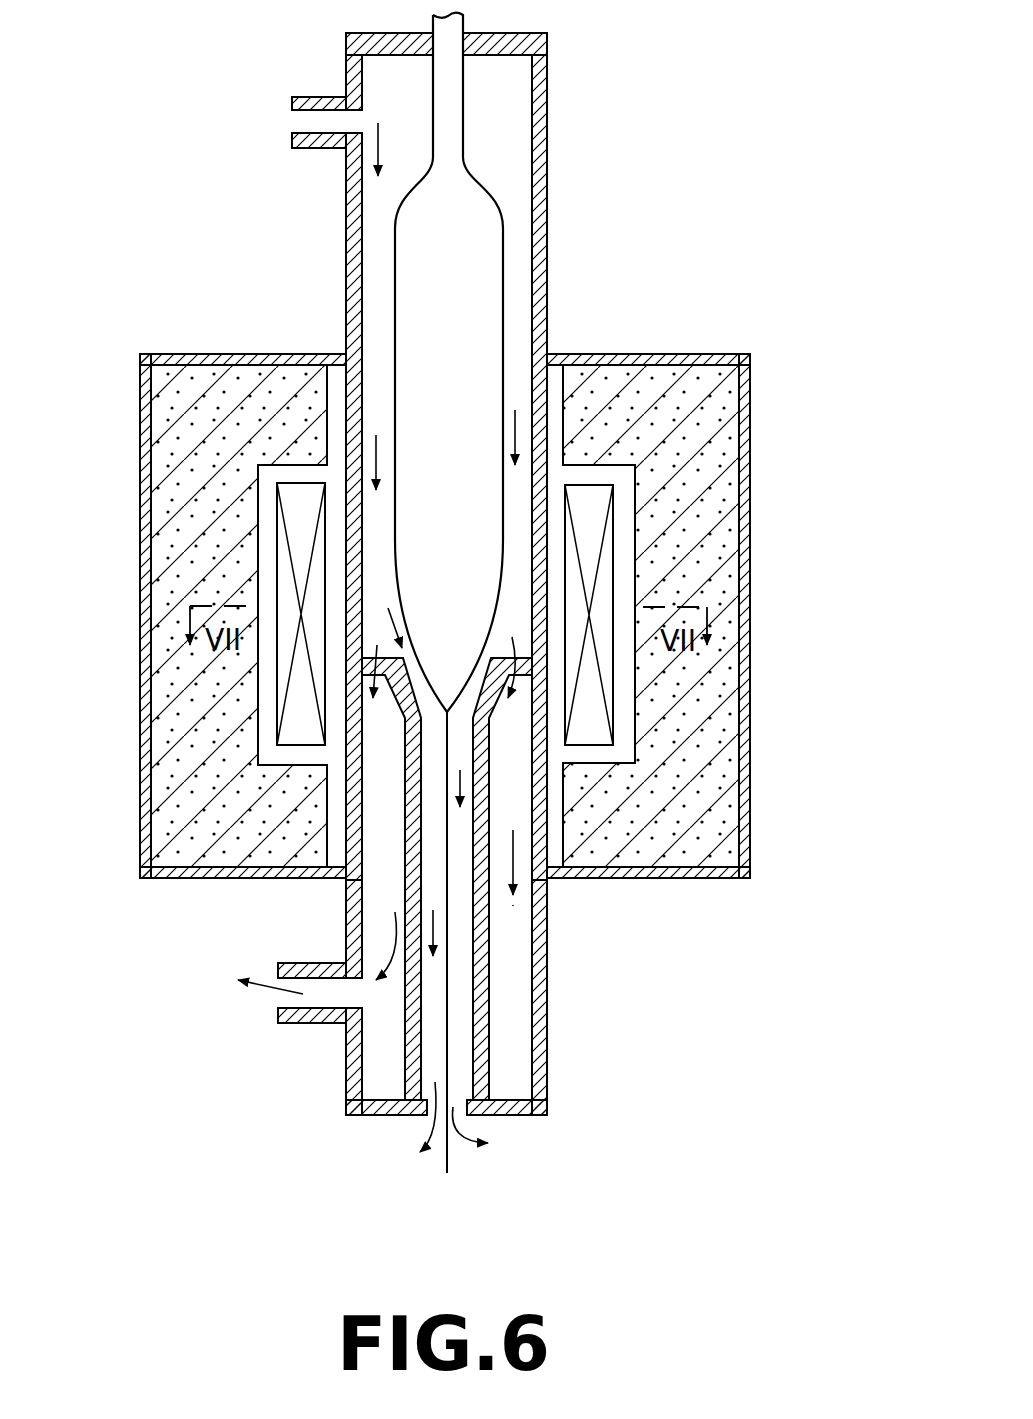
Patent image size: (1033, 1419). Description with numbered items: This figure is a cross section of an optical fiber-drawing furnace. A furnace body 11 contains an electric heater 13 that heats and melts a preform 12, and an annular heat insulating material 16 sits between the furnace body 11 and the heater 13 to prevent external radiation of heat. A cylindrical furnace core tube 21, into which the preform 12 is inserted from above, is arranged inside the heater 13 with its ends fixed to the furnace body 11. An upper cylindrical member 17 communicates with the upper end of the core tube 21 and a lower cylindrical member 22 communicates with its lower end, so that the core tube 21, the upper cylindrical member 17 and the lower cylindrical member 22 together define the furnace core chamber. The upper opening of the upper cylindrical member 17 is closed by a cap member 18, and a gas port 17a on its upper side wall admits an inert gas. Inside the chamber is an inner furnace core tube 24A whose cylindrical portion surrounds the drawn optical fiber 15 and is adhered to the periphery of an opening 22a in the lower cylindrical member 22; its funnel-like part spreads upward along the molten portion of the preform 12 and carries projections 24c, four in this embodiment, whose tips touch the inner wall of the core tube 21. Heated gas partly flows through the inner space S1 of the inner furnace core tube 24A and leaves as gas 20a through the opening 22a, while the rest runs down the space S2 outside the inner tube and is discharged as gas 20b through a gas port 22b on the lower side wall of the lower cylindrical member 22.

The furnace body 11 is at (697, 355).
The preform 12 is at (478, 268).
The electric heater 13 is at (287, 697).
The optical fiber 15 is at (447, 1020).
The heat insulating material 16 is at (175, 410).
The upper cylindrical member 17 is at (545, 138).
The gas port 17a is at (312, 97).
The cap member 18 is at (530, 46).
The discharged gas 20a is at (427, 1130).
The discharged gas 20b is at (253, 993).
The cylindrical furnace core tube 21 is at (500, 814).
The lower cylindrical member 22 is at (537, 958).
The opening 22a is at (460, 1100).
The gas port 22b is at (308, 962).
The inner furnace core tube 24A is at (538, 808).
The projections 24c is at (392, 660).
The inner space S1 is at (433, 795).
The space S2 is at (388, 836).